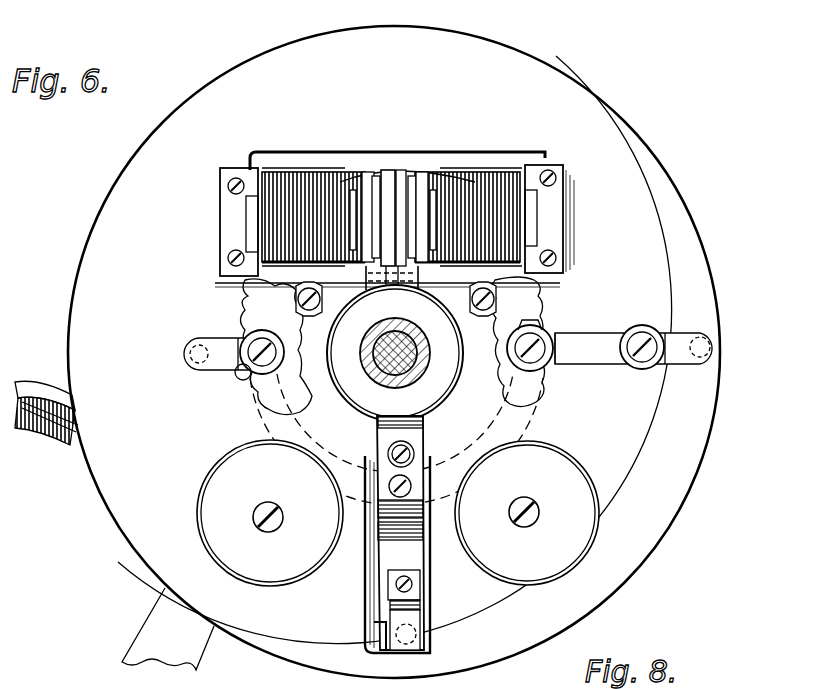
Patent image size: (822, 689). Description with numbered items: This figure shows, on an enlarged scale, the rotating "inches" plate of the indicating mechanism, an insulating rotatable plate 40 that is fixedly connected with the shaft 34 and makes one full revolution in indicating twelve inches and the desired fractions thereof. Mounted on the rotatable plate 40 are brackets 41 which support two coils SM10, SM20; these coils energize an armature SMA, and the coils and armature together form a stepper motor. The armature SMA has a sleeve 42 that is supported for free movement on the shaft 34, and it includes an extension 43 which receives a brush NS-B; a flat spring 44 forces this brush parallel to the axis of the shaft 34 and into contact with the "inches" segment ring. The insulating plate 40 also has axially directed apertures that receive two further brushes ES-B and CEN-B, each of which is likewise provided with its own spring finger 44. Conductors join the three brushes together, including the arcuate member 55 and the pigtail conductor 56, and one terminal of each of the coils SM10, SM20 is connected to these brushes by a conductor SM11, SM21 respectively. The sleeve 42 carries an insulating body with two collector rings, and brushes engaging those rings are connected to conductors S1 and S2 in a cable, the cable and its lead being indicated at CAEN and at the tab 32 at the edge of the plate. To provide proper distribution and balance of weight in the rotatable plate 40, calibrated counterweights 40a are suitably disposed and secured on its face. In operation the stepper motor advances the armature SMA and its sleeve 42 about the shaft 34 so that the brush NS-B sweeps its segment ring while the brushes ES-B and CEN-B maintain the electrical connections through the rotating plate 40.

The rotatable plate 40 is at (652, 172).
The calibrated counterweights 40a is at (398, 513).
The brackets 41 is at (222, 208).
The sleeve 42 is at (428, 366).
The extension 43 is at (394, 552).
The flat spring 44 is at (214, 372).
The shaft 34 is at (385, 352).
The tab 32 is at (168, 629).
The arcuate member 55 is at (520, 414).
The pigtail conductor 56 is at (395, 423).
The coil SM20 is at (275, 192).
The coil SM10 is at (460, 190).
The armature SMA is at (388, 176).
The conductor SM21 is at (248, 298).
The conductor SM11 is at (540, 302).
The conductor S2 is at (296, 335).
The conductor S1 is at (490, 335).
The brush CEN-B is at (190, 354).
The brush ES-B is at (716, 344).
The brush NS-B is at (420, 633).
The cable CAEN is at (38, 420).